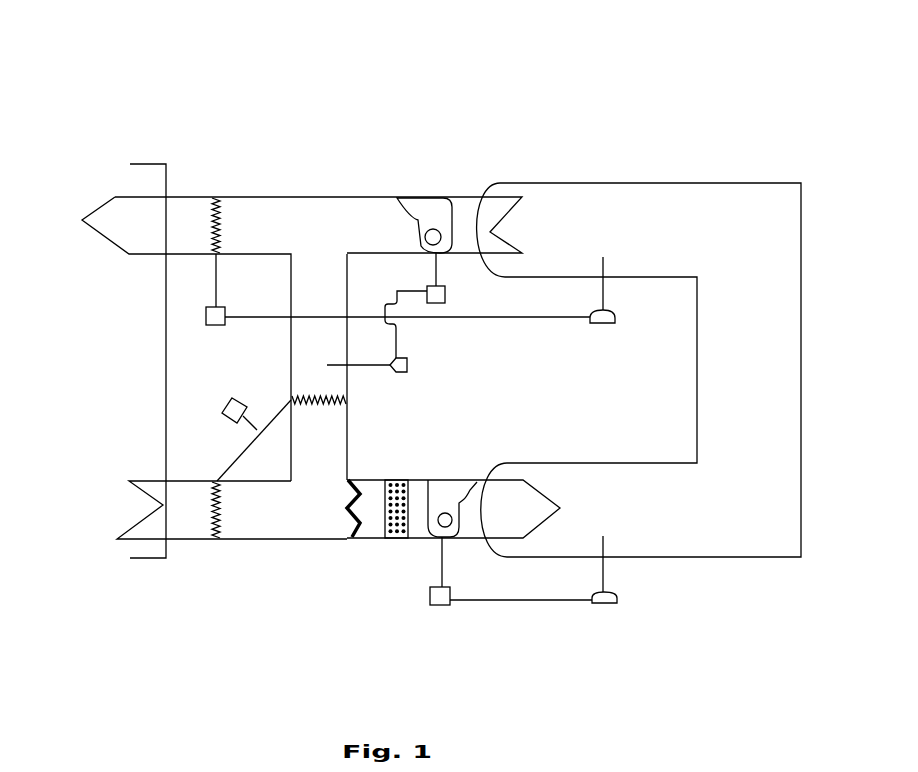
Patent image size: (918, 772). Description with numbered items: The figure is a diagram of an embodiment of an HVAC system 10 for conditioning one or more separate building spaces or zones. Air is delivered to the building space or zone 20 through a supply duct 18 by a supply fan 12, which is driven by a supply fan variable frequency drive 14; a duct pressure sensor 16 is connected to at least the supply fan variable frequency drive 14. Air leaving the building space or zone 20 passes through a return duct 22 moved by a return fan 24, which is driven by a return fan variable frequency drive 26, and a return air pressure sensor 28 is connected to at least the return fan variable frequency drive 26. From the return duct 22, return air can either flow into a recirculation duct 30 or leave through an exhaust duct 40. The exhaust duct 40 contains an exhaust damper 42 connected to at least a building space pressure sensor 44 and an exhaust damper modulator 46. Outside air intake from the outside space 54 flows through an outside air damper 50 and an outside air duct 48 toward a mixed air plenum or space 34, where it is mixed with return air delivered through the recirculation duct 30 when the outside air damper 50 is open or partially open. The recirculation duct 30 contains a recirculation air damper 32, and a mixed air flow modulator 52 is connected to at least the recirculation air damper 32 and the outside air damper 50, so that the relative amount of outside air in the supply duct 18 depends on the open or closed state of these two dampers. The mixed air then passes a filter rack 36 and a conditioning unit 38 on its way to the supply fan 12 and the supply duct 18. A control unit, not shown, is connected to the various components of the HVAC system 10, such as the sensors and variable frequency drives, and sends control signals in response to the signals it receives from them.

The HVAC system 10 is at (508, 93).
The supply fan 12 is at (452, 533).
The supply fan variable frequency drive 14 is at (510, 609).
The duct pressure sensor 16 is at (606, 584).
The supply duct 18 is at (501, 519).
The building space or zone 20 is at (733, 367).
The return duct 22 is at (363, 239).
The return fan 24 is at (424, 229).
The return fan variable frequency drive 26 is at (431, 321).
The return air pressure sensor 28 is at (383, 365).
The recirculation duct 30 is at (304, 311).
The recirculation air damper 32 is at (335, 402).
The mixed air plenum or space 34 is at (313, 519).
The filter rack 36 is at (364, 537).
The conditioning unit 38 is at (395, 472).
The exhaust duct 40 is at (246, 238).
The exhaust damper 42 is at (218, 212).
The building space pressure sensor 44 is at (622, 290).
The exhaust damper modulator 46 is at (200, 290).
The outside air duct 48 is at (235, 523).
The outside air damper 50 is at (214, 524).
The mixed air flow modulator 52 is at (243, 437).
The outside space 54 is at (129, 369).